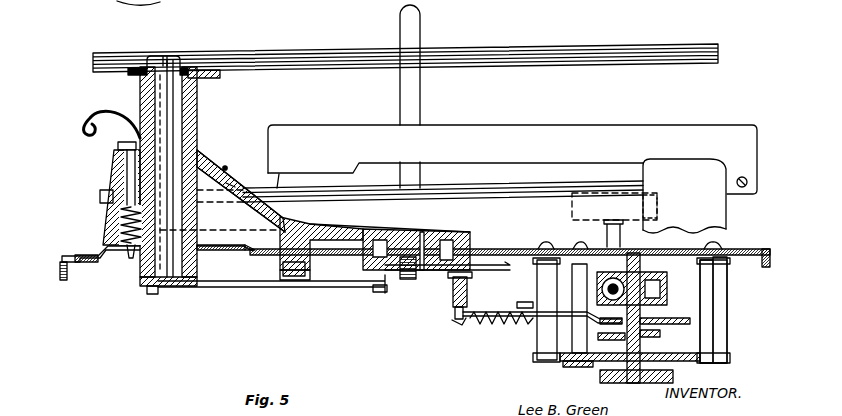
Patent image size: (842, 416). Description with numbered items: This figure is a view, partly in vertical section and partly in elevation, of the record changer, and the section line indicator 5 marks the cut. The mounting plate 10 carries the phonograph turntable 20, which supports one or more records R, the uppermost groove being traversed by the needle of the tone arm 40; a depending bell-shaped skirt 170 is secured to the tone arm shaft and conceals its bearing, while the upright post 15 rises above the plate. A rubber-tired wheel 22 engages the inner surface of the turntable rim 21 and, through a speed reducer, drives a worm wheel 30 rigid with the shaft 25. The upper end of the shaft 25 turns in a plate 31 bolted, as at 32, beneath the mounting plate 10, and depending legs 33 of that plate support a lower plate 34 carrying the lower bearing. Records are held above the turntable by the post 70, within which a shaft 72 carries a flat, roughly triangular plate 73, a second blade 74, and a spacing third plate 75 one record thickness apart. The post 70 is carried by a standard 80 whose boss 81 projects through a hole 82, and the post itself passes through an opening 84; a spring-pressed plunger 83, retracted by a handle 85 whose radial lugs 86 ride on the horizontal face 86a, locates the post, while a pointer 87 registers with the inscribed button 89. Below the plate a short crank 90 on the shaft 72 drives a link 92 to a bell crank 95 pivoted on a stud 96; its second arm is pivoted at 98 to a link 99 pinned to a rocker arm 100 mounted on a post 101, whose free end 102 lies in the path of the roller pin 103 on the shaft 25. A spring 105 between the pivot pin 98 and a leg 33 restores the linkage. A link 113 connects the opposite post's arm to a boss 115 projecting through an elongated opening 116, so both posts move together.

The section line indicator 5 is at (157, 12).
The mounting plate 10 is at (58, 268).
The upright post 15 is at (398, 97).
The phonograph turntable 20 is at (538, 201).
The rim 21 is at (516, 231).
The rubber-tired wheel 22 is at (592, 205).
The shaft 25 is at (635, 385).
The worm wheel 30 is at (660, 291).
The plate 31 is at (690, 270).
The bolt 32 is at (720, 245).
The legs 33 is at (728, 338).
The lower plate 34 is at (575, 356).
The tone arm 40 is at (476, 131).
The post 70 is at (197, 136).
The shaft 72 is at (197, 159).
The flat, roughly triangular plate 73 is at (220, 80).
The second plate or blade 74 is at (130, 62).
The third plate 75 is at (135, 75).
The standard 80 is at (223, 212).
The boss 81 is at (415, 234).
The hole 82 is at (449, 234).
The spring-pressed plunger 83 is at (128, 185).
The opening 84 is at (197, 262).
The handle 85 is at (82, 120).
The radial lugs 86 is at (113, 160).
The horizontal face 86a is at (115, 146).
The pointer 87 is at (103, 240).
The inscribed button 89 is at (80, 253).
The short crank 90 is at (140, 282).
The link 92 is at (340, 289).
The bell crank 95 is at (453, 286).
The stud 96 is at (398, 292).
The pivot pin 98 is at (480, 325).
The link 99 is at (452, 320).
The rocker arm 100 is at (567, 308).
The post 101 is at (580, 368).
The free end 102 is at (597, 305).
The roller pin 103 is at (668, 316).
The spring 105 is at (521, 310).
The link 113 is at (276, 276).
The boss 115 is at (300, 246).
The elongated opening 116 is at (306, 268).
The bell-shaped skirt 170 is at (722, 208).
The record R is at (99, 202).